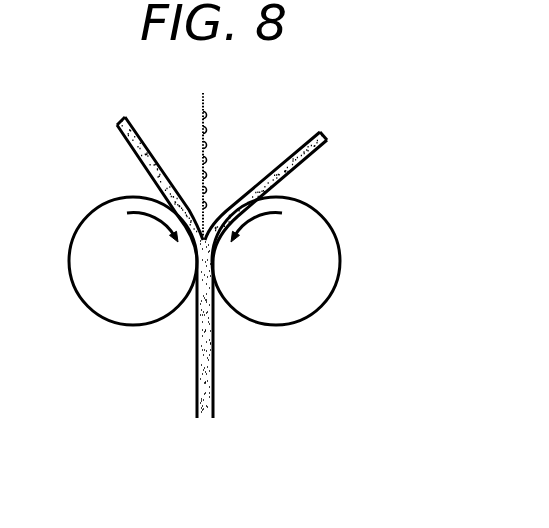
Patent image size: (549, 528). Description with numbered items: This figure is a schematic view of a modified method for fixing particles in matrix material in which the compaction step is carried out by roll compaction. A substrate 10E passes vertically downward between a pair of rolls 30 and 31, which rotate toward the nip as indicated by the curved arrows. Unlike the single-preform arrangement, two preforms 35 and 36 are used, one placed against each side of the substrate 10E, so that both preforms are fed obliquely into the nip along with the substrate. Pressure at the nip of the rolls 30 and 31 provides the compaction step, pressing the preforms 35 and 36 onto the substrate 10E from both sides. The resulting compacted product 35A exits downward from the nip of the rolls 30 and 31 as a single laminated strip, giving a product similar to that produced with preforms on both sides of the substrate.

The substrate 10E is at (208, 127).
The roll 30 is at (103, 308).
The roll 31 is at (292, 310).
The preform 35 is at (127, 142).
The product 35A is at (197, 370).
The preform 36 is at (300, 158).